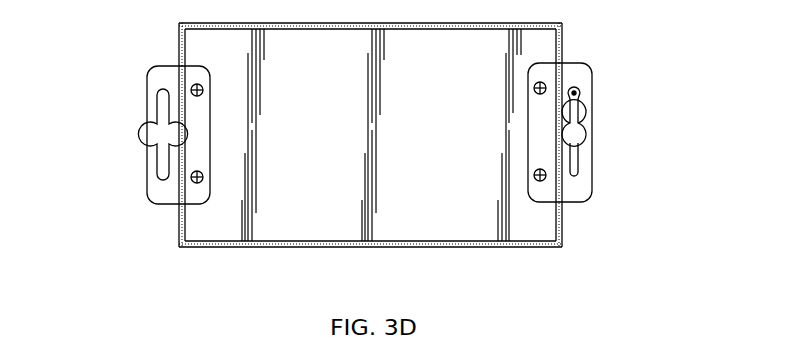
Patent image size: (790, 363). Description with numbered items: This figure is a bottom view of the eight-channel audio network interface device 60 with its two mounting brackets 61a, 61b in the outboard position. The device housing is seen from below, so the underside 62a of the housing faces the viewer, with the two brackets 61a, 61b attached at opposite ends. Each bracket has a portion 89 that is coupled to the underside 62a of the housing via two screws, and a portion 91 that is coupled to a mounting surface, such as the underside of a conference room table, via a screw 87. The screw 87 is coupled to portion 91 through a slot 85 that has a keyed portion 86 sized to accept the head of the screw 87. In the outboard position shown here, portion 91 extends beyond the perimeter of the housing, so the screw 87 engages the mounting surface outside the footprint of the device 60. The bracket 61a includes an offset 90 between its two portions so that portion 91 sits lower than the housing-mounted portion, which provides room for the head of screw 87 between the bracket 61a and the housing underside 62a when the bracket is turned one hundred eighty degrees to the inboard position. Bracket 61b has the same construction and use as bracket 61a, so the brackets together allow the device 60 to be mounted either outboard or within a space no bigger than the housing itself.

The audio network interface device 60 is at (323, 139).
The mounting bracket 61a is at (559, 134).
The mounting bracket 61b is at (155, 87).
The underside of housing 62a is at (195, 52).
The slot 85 is at (578, 173).
The keyed portion 86 is at (577, 133).
The screw 87 is at (578, 93).
The bracket portion 89 is at (535, 135).
The offset 90 is at (537, 172).
The bracket portion 91 is at (588, 201).